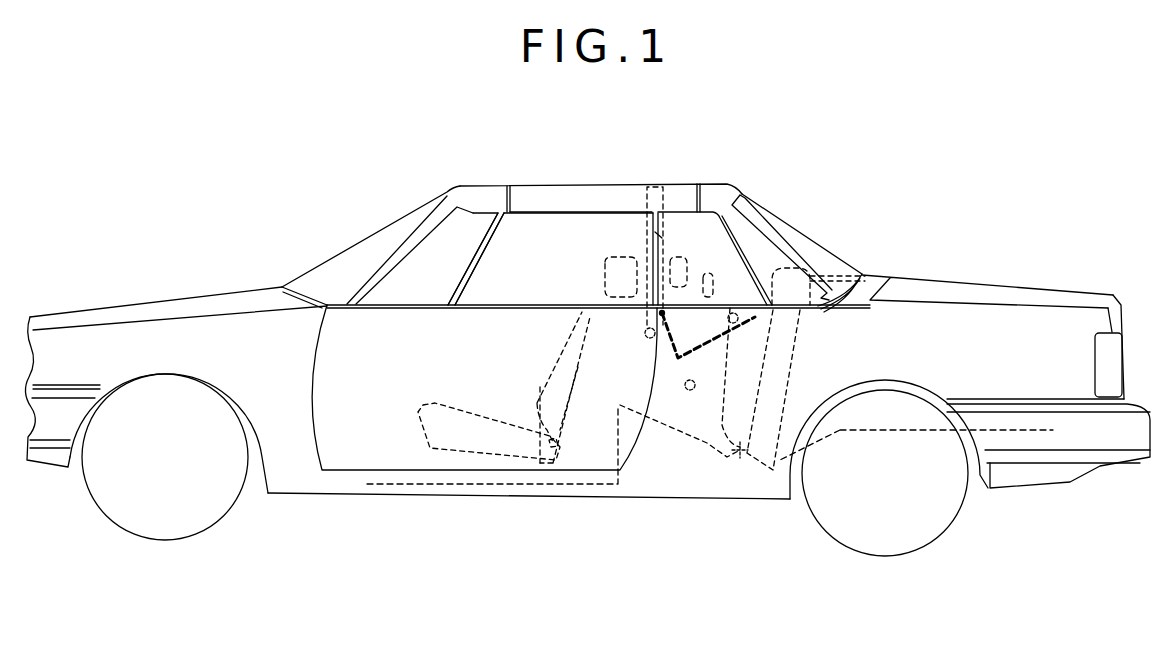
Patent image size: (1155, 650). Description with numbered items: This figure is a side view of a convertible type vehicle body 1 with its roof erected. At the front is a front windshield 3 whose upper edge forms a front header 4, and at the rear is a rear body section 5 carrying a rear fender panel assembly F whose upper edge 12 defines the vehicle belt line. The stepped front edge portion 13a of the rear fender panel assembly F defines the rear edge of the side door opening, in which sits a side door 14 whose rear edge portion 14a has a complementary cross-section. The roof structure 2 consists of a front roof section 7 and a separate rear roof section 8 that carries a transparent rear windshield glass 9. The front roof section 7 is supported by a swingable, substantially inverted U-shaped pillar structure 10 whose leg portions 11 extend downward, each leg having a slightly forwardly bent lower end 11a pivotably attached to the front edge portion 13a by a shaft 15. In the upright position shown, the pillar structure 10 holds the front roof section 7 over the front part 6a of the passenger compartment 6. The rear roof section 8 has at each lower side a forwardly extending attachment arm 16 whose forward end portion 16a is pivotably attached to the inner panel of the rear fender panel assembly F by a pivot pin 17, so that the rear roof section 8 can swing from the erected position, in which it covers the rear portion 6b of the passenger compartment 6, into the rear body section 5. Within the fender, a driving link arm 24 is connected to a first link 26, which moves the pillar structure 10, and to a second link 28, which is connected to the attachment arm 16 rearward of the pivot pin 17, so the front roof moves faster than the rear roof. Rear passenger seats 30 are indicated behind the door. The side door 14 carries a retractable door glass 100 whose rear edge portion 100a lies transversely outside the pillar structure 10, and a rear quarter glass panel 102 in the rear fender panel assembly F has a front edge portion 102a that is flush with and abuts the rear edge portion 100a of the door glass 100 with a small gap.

The vehicle body 1 is at (262, 278).
The roof structure 2 is at (623, 177).
The front windshield 3 is at (360, 240).
The front header 4 is at (493, 180).
The rear body section 5 is at (887, 267).
The passenger compartment 6 is at (521, 276).
The front part of passenger compartment 6a is at (508, 248).
The rear portion of passenger compartment 6b is at (715, 258).
The front roof section 7 is at (563, 177).
The rear roof section 8 is at (727, 182).
The rear windshield glass 9 is at (818, 238).
The pillar structure 10 is at (668, 186).
The leg portion 11 is at (618, 268).
The lower end of leg portion 11a is at (591, 407).
The upper edge 12 is at (696, 277).
The front edge portion 13a is at (640, 384).
The side door 14 is at (517, 305).
The rear edge portion of side door 14a is at (663, 390).
The shaft 15 is at (654, 342).
The attachment arm 16 is at (793, 312).
The forward end portion 16a is at (664, 316).
The pivot pin 17 is at (796, 286).
The driving link arm 24 is at (696, 387).
The first link 26 is at (622, 320).
The second link 28 is at (708, 340).
The rear passenger seat 30 is at (777, 380).
The door glass 100 is at (487, 265).
The rear edge portion of door glass 100a is at (648, 232).
The rear quarter glass panel 102 is at (773, 205).
The front edge portion of rear quarter glass panel 102a is at (660, 233).
The rear fender panel assembly F is at (990, 241).